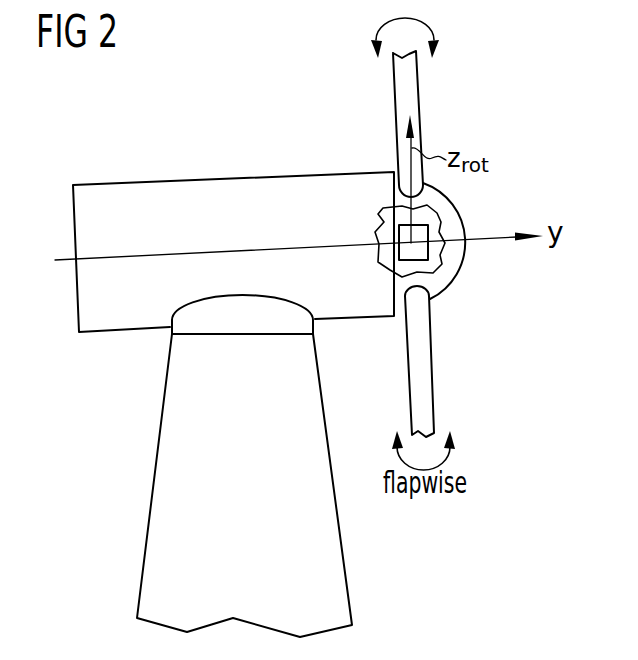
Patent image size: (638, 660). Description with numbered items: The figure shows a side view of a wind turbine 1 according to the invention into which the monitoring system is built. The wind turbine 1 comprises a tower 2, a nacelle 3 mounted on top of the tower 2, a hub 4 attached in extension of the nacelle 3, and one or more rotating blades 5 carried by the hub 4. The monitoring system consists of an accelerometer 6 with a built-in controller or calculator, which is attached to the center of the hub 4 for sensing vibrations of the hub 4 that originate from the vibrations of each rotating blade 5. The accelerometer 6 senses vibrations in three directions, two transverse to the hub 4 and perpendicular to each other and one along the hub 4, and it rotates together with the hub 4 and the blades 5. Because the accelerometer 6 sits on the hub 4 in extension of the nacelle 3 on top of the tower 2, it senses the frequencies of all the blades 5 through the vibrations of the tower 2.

The wind turbine 1 is at (134, 142).
The tower 2 is at (167, 470).
The nacelle 3 is at (87, 295).
The hub 4 is at (447, 288).
The rotating blade 5 is at (400, 104).
The accelerometer 6 is at (422, 253).